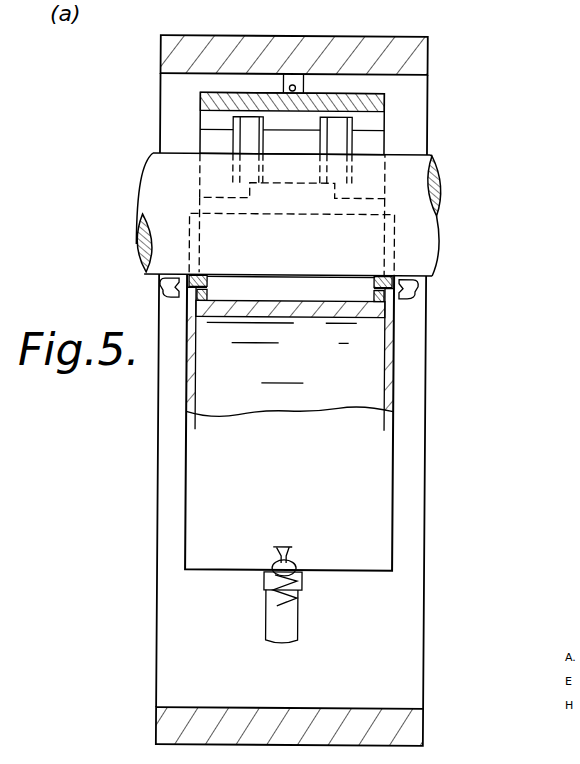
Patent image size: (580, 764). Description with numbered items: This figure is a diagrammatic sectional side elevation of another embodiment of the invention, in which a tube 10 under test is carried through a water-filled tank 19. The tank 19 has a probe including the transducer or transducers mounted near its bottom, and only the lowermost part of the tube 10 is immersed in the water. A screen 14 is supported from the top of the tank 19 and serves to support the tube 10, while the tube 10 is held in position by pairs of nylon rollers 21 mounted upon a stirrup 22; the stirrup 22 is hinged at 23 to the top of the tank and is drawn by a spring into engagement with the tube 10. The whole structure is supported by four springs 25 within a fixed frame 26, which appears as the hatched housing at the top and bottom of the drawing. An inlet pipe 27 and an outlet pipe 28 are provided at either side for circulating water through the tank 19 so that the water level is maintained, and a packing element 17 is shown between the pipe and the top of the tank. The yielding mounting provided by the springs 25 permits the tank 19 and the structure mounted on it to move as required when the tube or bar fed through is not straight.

The tube 10 is at (407, 173).
The screen 14 is at (358, 297).
The packing 17 is at (290, 277).
The tank 19 is at (281, 411).
The nylon rollers 21 is at (322, 137).
The stirrup 22 is at (385, 103).
The hinge 23 is at (385, 190).
The springs 25 is at (292, 88).
The fixed frame 26 is at (429, 61).
The inlet pipe 27 is at (165, 288).
The outlet pipe 28 is at (420, 295).